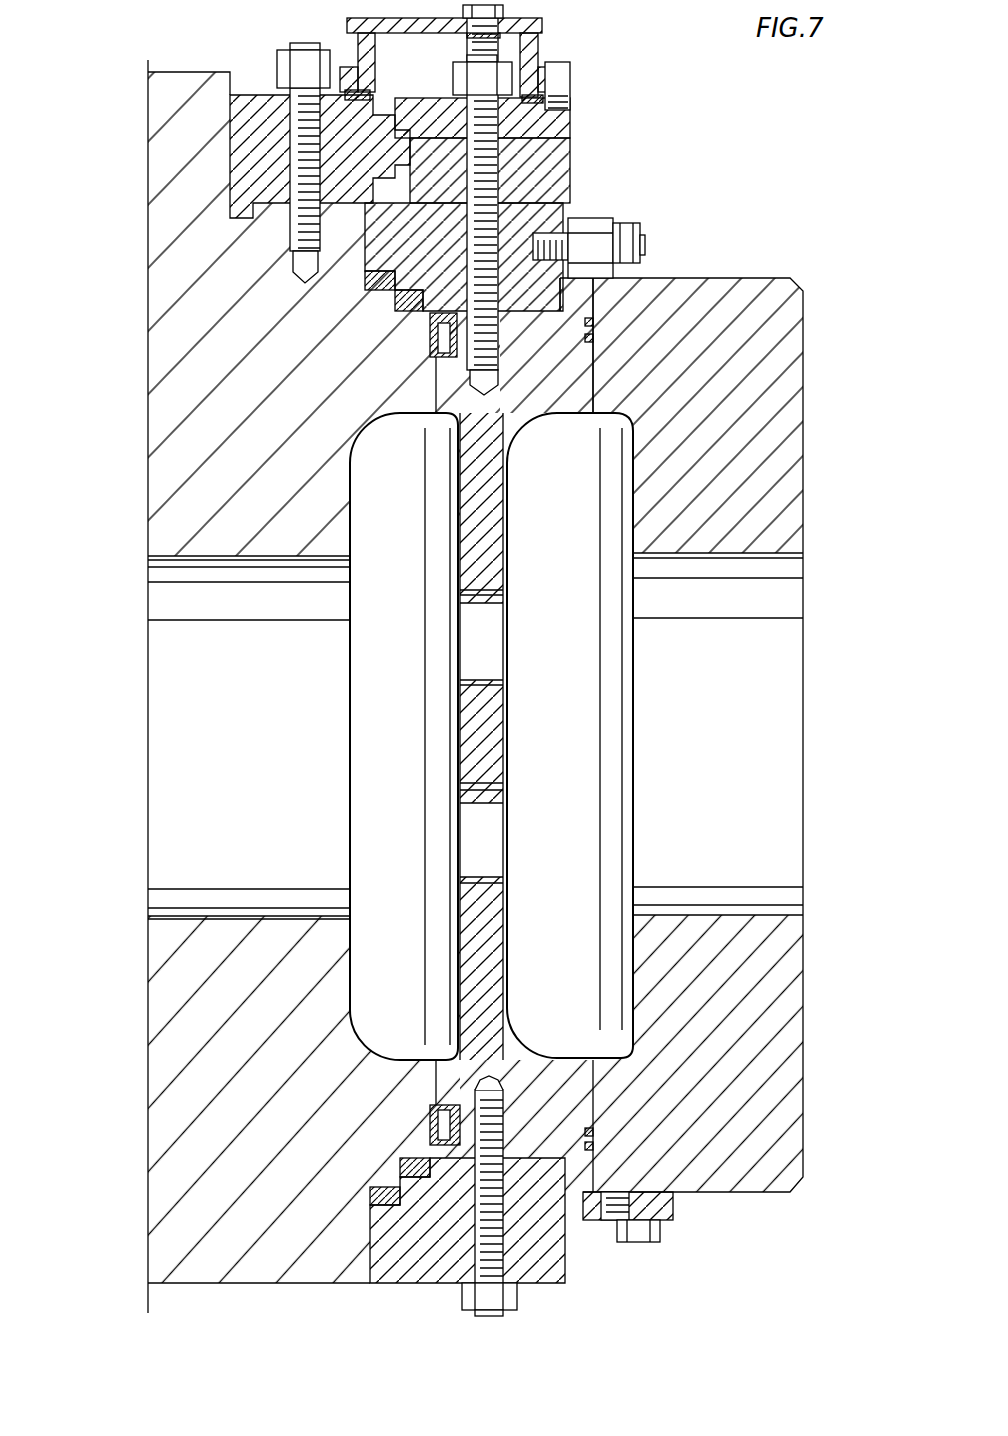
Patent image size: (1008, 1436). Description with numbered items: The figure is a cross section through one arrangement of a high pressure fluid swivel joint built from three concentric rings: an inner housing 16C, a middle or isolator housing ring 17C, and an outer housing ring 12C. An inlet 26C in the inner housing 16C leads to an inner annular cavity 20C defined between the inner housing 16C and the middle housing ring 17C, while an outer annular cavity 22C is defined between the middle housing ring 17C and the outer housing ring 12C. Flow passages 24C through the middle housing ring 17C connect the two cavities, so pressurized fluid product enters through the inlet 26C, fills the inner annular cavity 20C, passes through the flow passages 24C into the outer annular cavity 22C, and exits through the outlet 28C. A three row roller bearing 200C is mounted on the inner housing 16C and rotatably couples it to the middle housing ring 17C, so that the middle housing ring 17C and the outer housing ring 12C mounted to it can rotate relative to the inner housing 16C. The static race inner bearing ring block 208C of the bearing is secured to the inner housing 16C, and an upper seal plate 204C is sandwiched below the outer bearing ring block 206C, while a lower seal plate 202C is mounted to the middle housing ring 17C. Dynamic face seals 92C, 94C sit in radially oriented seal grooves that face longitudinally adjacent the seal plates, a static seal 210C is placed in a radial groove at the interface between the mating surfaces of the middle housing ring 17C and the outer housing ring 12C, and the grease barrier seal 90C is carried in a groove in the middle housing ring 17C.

The outer housing ring 12C is at (805, 1058).
The inner housing 16C is at (155, 1098).
The middle housing ring 17C is at (560, 345).
The inner annular cavity 20C is at (388, 1000).
The outer annular cavity 22C is at (612, 982).
The flow passages 24C is at (493, 645).
The inlet 26C is at (170, 814).
The outlet 28C is at (790, 603).
The grease barrier seal 90C is at (425, 350).
The face seal 92C is at (388, 312).
The face seal 94C is at (393, 305).
The three row roller bearing 200C is at (322, 90).
The lower seal plate 202C is at (565, 1258).
The upper seal plate 204C is at (375, 257).
The outer bearing ring block 206C is at (572, 168).
The static race inner bearing ring block 208C is at (250, 138).
The static seal 210C is at (600, 328).